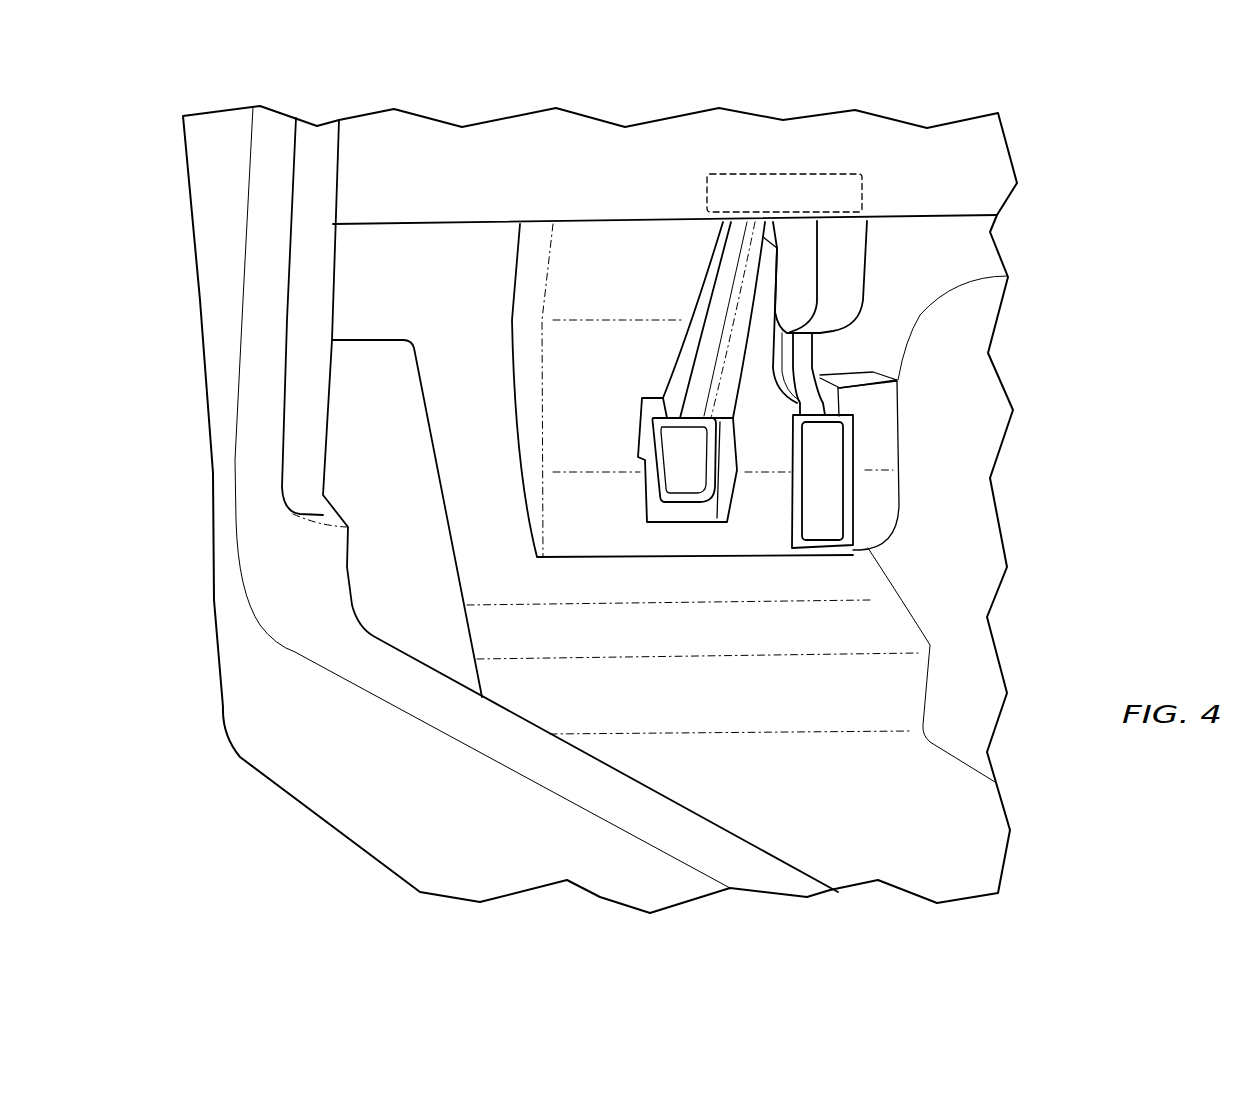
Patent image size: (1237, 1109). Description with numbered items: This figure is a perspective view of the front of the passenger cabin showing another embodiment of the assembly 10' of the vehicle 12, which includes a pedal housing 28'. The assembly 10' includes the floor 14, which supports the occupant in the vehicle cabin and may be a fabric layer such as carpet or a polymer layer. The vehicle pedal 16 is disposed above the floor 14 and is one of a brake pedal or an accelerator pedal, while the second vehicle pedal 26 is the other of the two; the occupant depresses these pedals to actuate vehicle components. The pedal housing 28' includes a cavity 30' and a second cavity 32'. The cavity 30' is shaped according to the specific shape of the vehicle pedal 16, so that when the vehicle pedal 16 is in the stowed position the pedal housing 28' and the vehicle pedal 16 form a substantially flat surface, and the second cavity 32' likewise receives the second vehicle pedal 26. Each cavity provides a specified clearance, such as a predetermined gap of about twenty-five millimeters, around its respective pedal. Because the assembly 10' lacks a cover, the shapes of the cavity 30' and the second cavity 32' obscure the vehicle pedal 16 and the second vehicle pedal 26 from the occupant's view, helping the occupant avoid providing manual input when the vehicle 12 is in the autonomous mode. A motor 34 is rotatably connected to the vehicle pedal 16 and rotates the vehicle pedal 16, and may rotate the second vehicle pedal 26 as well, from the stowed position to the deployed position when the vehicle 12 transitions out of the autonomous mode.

The assembly 10' is at (647, 499).
The vehicle 12 is at (337, 80).
The floor 14 is at (737, 519).
The vehicle pedal 16 is at (718, 293).
The second vehicle pedal 26 is at (800, 360).
The pedal housing 28' is at (665, 181).
The cavity 30' is at (687, 497).
The second cavity 32' is at (800, 505).
The motor 34 is at (837, 172).